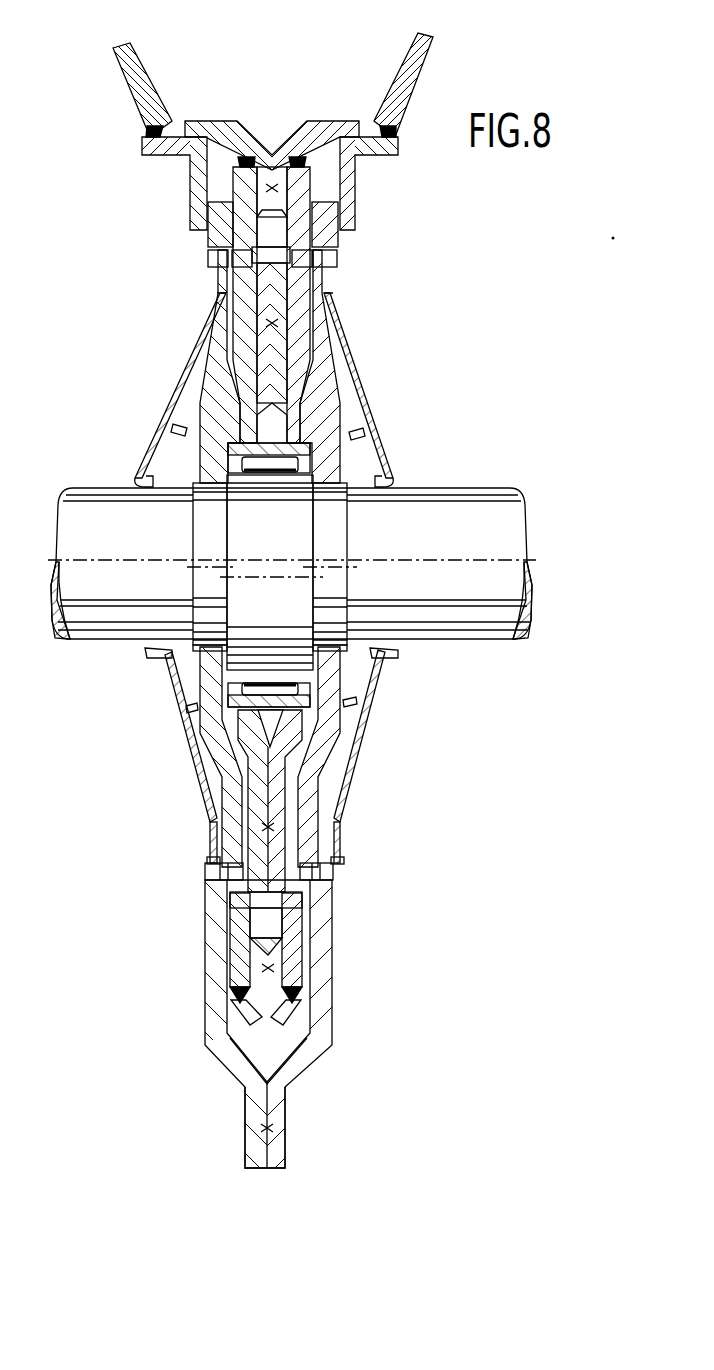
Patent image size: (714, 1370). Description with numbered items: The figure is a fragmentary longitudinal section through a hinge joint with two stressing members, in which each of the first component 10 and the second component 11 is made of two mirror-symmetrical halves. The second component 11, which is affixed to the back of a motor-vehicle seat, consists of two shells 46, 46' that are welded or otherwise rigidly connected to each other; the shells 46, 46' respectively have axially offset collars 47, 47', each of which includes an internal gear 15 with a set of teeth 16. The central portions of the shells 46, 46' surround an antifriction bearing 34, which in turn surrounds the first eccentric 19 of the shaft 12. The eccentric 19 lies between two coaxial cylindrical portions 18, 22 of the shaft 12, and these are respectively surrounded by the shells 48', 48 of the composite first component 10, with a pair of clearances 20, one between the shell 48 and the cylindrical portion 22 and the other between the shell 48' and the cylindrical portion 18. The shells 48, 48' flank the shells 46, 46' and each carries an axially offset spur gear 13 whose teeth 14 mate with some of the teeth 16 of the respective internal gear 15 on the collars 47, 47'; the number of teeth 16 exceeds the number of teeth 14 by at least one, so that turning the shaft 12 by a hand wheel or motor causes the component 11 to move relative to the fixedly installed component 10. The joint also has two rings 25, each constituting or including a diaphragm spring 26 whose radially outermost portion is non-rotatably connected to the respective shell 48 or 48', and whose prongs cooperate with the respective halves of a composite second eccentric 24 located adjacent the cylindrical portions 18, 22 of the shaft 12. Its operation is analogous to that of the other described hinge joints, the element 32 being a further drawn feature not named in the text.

The first component 10 is at (300, 1104).
The second component 11 is at (268, 126).
The shaft 12 is at (486, 481).
The spur gear 13 is at (220, 757).
The teeth 14 is at (213, 860).
The internal gear 15 is at (237, 920).
The teeth 16 is at (215, 888).
The cylindrical portion 18 is at (342, 537).
The first eccentric 19 is at (275, 537).
The clearance 20 is at (205, 650).
The cylindrical portion 22 is at (222, 537).
The second eccentric 24 is at (143, 537).
The ring 25 is at (168, 366).
The diaphragm spring 26 is at (178, 722).
The retaining lug 32 is at (177, 423).
The antifriction bearing 34 is at (272, 463).
The shell 46 is at (173, 305).
The shell 46' is at (377, 305).
The collar 47 is at (181, 959).
The collar 47' is at (368, 959).
The shell 48 is at (165, 366).
The shell 48' is at (385, 366).